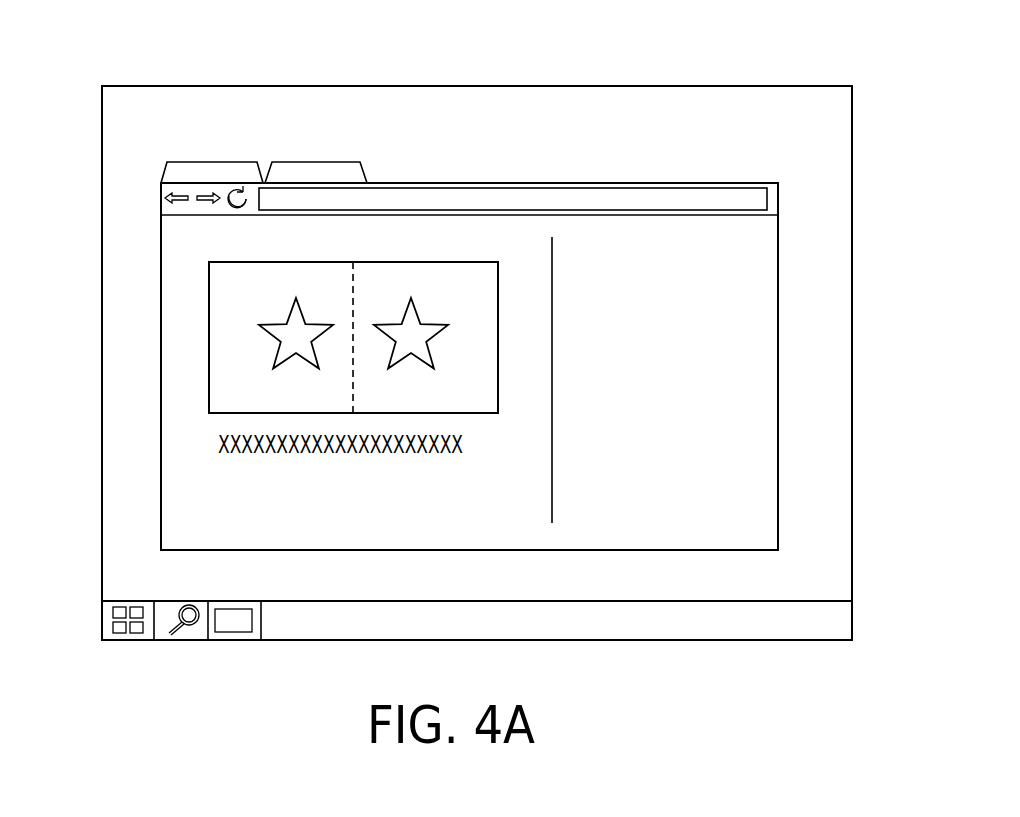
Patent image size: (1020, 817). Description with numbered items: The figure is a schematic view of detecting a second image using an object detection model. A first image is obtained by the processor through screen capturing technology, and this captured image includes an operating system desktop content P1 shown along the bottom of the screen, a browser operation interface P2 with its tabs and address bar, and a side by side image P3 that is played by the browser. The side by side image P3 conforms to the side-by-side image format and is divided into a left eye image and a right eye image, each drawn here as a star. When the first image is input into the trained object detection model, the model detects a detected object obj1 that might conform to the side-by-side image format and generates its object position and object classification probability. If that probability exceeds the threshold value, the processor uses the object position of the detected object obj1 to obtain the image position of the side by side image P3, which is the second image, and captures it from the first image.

The browser operation interface P2 is at (772, 201).
The side by side image P3 is at (295, 220).
The detected object obj1 is at (295, 193).
The operating system desktop content P1 is at (832, 620).